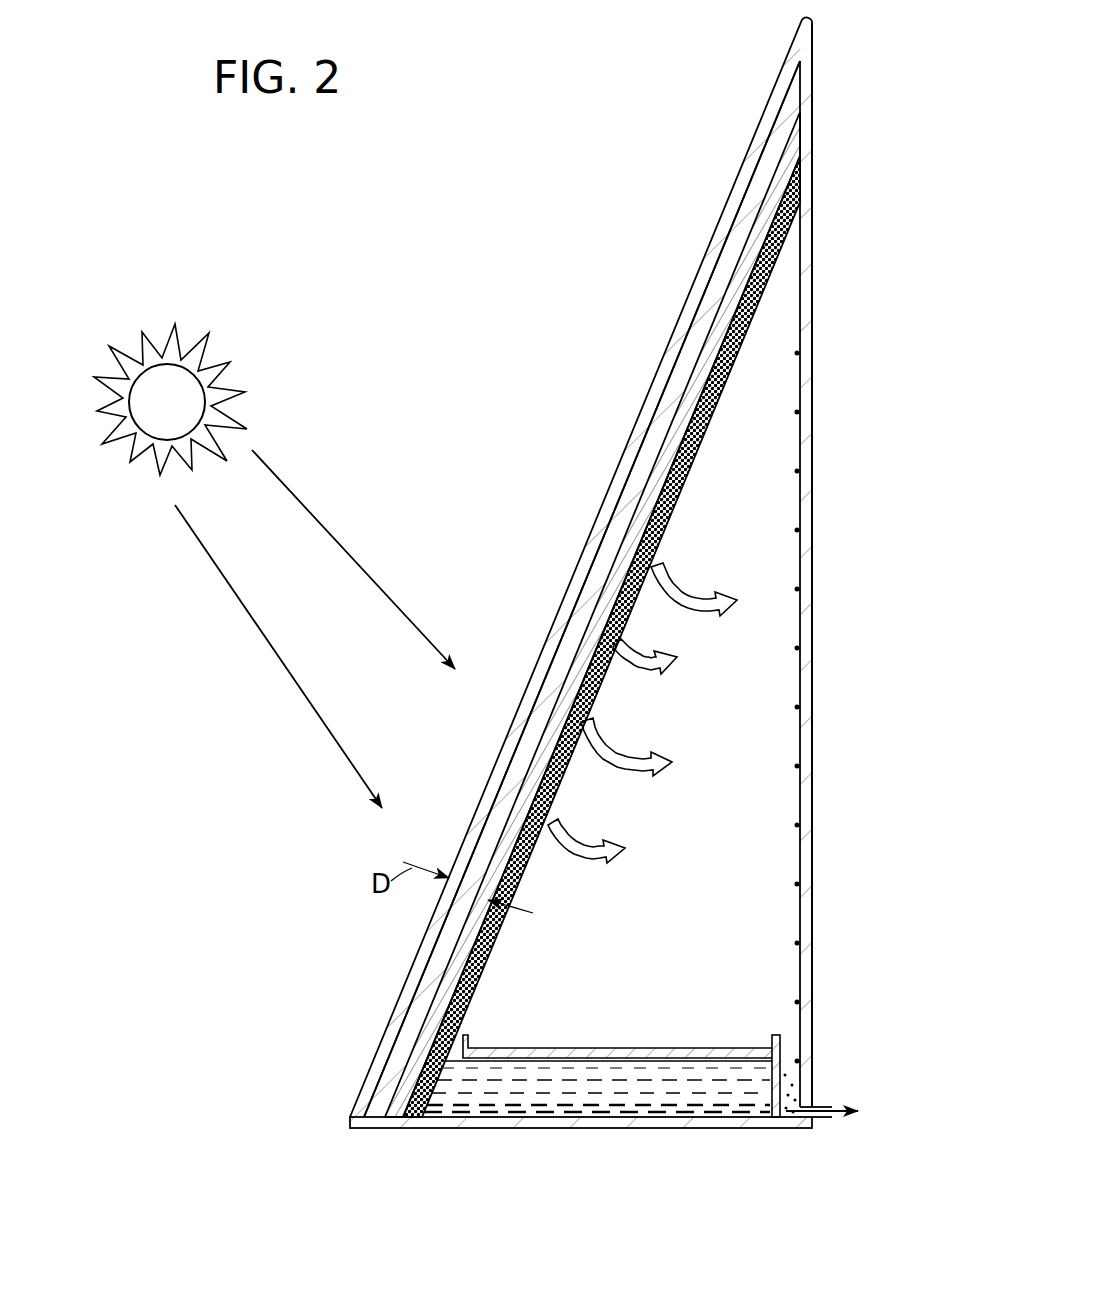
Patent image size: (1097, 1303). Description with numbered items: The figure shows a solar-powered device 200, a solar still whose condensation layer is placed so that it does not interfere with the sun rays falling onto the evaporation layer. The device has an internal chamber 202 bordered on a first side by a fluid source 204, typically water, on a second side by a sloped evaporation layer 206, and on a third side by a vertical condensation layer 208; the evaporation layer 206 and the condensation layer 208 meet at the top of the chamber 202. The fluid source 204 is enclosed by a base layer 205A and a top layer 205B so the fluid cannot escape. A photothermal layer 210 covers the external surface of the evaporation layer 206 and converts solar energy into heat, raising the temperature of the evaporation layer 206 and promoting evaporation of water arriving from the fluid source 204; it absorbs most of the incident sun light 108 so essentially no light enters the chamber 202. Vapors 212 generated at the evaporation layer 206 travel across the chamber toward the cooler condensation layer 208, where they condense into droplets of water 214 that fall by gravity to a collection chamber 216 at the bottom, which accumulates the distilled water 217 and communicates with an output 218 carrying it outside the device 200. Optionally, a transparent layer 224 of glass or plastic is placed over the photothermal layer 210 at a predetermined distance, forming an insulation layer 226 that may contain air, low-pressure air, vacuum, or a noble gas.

The incident sun light 108 is at (318, 522).
The solar-powered device 200 is at (630, 402).
The internal chamber 202 is at (732, 584).
The fluid source 204 is at (598, 1086).
The base layer 205A is at (535, 1124).
The top layer 205B is at (595, 1047).
The evaporation layer 206 is at (594, 636).
The condensation layer 208 is at (834, 652).
The photothermal layer 210 is at (522, 782).
The vapors 212 is at (641, 722).
The droplets of water 214 is at (796, 531).
The collection chamber 216 is at (792, 1066).
The distilled water 217 is at (794, 1083).
The output 218 is at (823, 1108).
The transparent layer 224 is at (356, 1108).
The insulation layer 226 is at (441, 941).